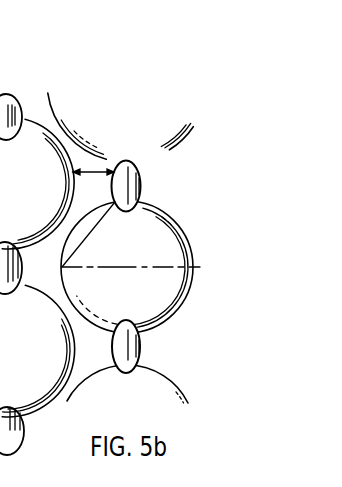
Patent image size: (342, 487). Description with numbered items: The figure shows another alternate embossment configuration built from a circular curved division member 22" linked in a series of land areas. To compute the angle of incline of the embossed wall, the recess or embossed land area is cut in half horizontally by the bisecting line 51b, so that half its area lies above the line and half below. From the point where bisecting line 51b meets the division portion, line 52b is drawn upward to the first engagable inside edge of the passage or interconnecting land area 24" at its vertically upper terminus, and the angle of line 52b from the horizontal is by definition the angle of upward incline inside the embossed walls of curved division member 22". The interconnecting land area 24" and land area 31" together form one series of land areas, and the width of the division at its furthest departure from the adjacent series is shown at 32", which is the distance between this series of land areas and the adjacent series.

The circular curved division member 22 is at (48, 93).
The interconnecting land area 24 is at (123, 160).
The land area 31 is at (157, 222).
The width of the division 32 is at (89, 174).
The bisecting line 51b is at (120, 268).
The incline line 52b is at (87, 242).